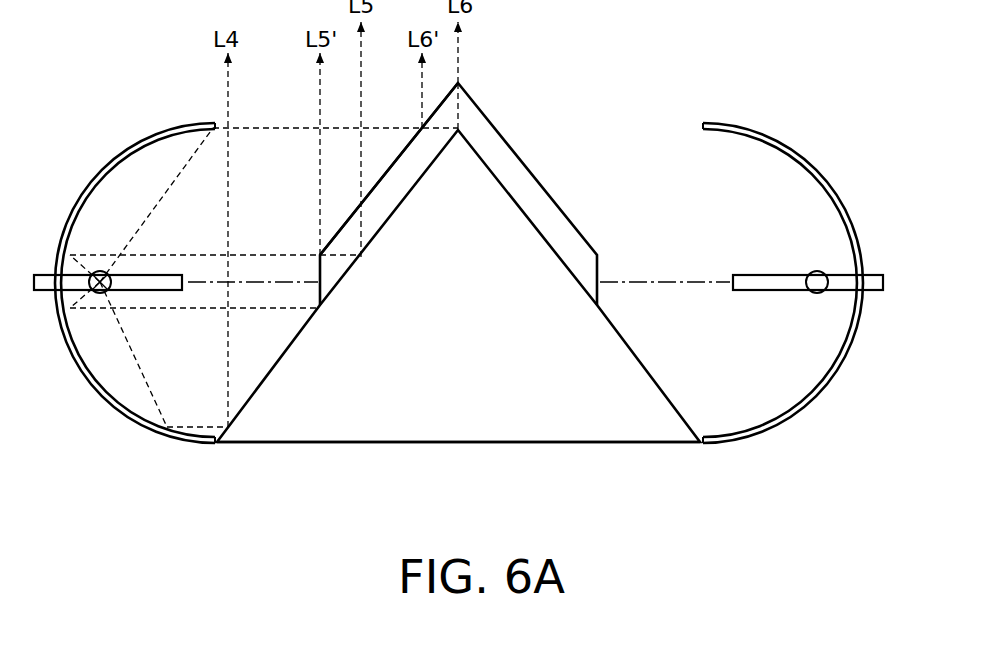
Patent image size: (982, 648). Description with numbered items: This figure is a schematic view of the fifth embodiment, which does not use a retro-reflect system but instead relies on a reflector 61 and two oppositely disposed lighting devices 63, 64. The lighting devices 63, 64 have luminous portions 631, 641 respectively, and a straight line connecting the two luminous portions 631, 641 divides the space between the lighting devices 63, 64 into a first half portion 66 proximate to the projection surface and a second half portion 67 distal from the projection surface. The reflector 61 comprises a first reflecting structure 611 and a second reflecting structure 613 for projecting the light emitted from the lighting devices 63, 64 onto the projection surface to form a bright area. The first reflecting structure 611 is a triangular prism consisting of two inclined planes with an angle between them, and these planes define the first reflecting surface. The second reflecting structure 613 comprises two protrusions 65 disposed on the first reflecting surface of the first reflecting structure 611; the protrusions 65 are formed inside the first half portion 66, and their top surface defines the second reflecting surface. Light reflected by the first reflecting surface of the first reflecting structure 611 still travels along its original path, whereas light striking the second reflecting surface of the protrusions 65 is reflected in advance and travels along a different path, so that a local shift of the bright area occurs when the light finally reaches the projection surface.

The reflector 61 is at (603, 447).
The first reflecting structure 611 is at (285, 357).
The second reflecting structure 613 is at (398, 154).
The lighting device 63 is at (112, 141).
The luminous portion 631 is at (78, 282).
The lighting device 64 is at (806, 143).
The luminous portion 641 is at (840, 280).
The protrusion 65 is at (509, 142).
The first half portion 66 is at (685, 262).
The second half portion 67 is at (685, 333).